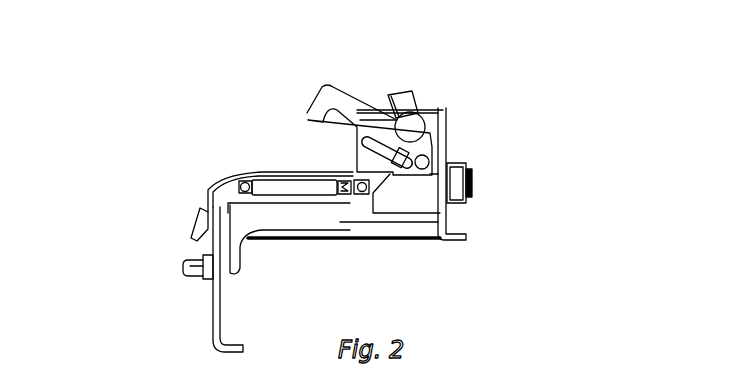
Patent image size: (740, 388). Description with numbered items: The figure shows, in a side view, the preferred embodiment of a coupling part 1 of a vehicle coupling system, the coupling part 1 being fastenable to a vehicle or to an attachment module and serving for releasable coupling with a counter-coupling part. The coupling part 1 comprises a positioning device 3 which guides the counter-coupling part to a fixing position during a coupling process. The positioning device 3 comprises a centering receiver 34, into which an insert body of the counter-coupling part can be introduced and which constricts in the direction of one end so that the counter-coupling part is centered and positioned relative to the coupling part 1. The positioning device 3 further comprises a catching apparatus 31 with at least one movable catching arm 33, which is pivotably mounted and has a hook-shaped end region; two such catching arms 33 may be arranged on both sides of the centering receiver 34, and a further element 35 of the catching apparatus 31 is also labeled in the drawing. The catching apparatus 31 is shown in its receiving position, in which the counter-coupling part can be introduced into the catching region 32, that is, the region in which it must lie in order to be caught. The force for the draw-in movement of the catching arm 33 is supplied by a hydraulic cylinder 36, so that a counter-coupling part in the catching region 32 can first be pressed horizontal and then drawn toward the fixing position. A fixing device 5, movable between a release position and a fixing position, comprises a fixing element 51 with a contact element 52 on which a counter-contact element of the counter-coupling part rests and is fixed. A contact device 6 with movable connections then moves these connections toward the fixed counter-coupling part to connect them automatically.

The coupling part 1 is at (503, 68).
The positioning device 3 is at (340, 230).
The centering receiver 34 is at (297, 195).
The catching region 32 is at (300, 137).
The catching apparatus 31 is at (500, 163).
The catching arm 33 is at (396, 133).
The slot 35 is at (403, 163).
The hydraulic cylinder 36 is at (270, 188).
The contact device 6 is at (470, 190).
The fixing device 5 is at (128, 270).
The fixing element 51 is at (128, 270).
The contact element 52 is at (183, 263).